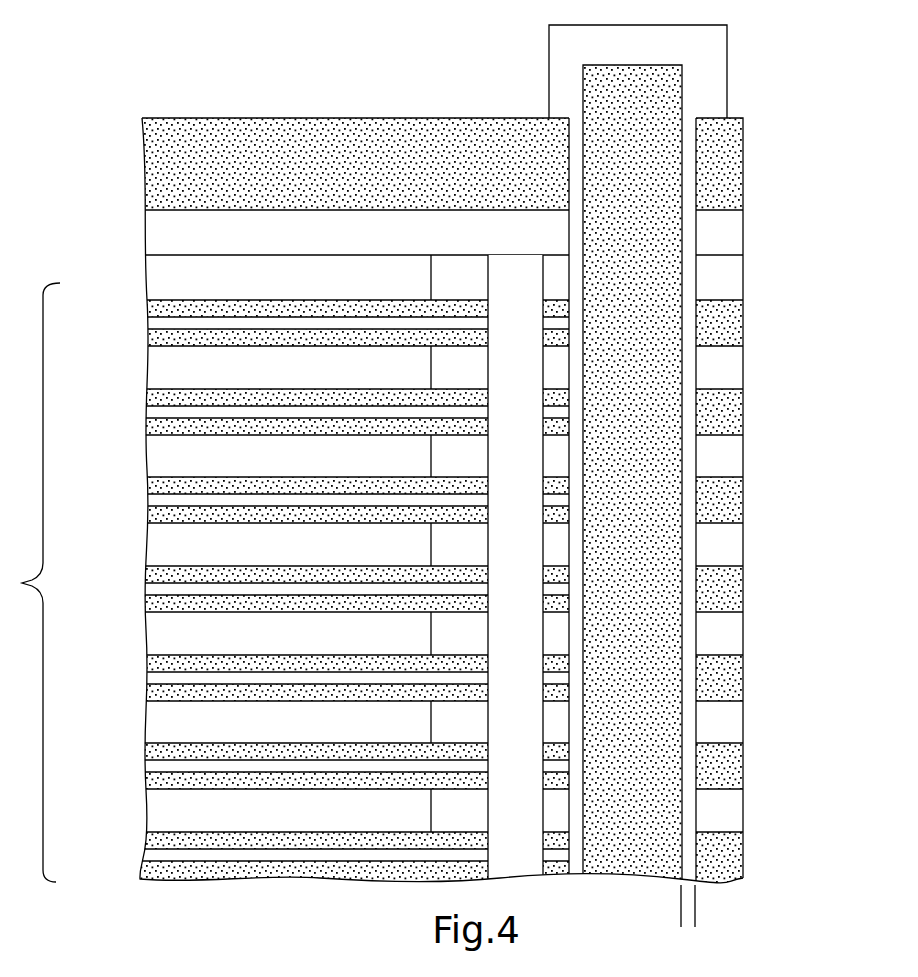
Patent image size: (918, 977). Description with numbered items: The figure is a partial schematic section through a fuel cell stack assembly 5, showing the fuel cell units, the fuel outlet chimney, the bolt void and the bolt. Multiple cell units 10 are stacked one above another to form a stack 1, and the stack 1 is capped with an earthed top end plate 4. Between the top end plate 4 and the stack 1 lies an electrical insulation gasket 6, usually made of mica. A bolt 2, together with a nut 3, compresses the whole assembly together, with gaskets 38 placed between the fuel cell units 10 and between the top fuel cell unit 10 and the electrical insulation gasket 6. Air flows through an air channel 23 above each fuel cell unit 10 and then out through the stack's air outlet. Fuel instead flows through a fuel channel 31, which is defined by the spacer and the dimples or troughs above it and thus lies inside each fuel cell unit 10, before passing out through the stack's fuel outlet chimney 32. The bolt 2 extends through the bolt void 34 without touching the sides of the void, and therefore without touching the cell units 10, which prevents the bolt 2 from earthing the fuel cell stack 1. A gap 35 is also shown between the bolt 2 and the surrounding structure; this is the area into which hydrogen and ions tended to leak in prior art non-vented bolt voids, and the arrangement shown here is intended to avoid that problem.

The stack 1 is at (31, 582).
The bolt 2 is at (648, 85).
The nut 3 is at (727, 25).
The top end plate 4 is at (725, 169).
The fuel cell stack assembly 5 is at (180, 86).
The electrical insulation gasket 6 is at (397, 235).
The cell unit 10 is at (135, 878).
The air channel 23 is at (257, 543).
The fuel channel 31 is at (349, 563).
The fuel outlet chimney 32 is at (520, 850).
The bolt void 34 is at (698, 318).
The gap 35 is at (731, 522).
The gasket 38 is at (627, 515).